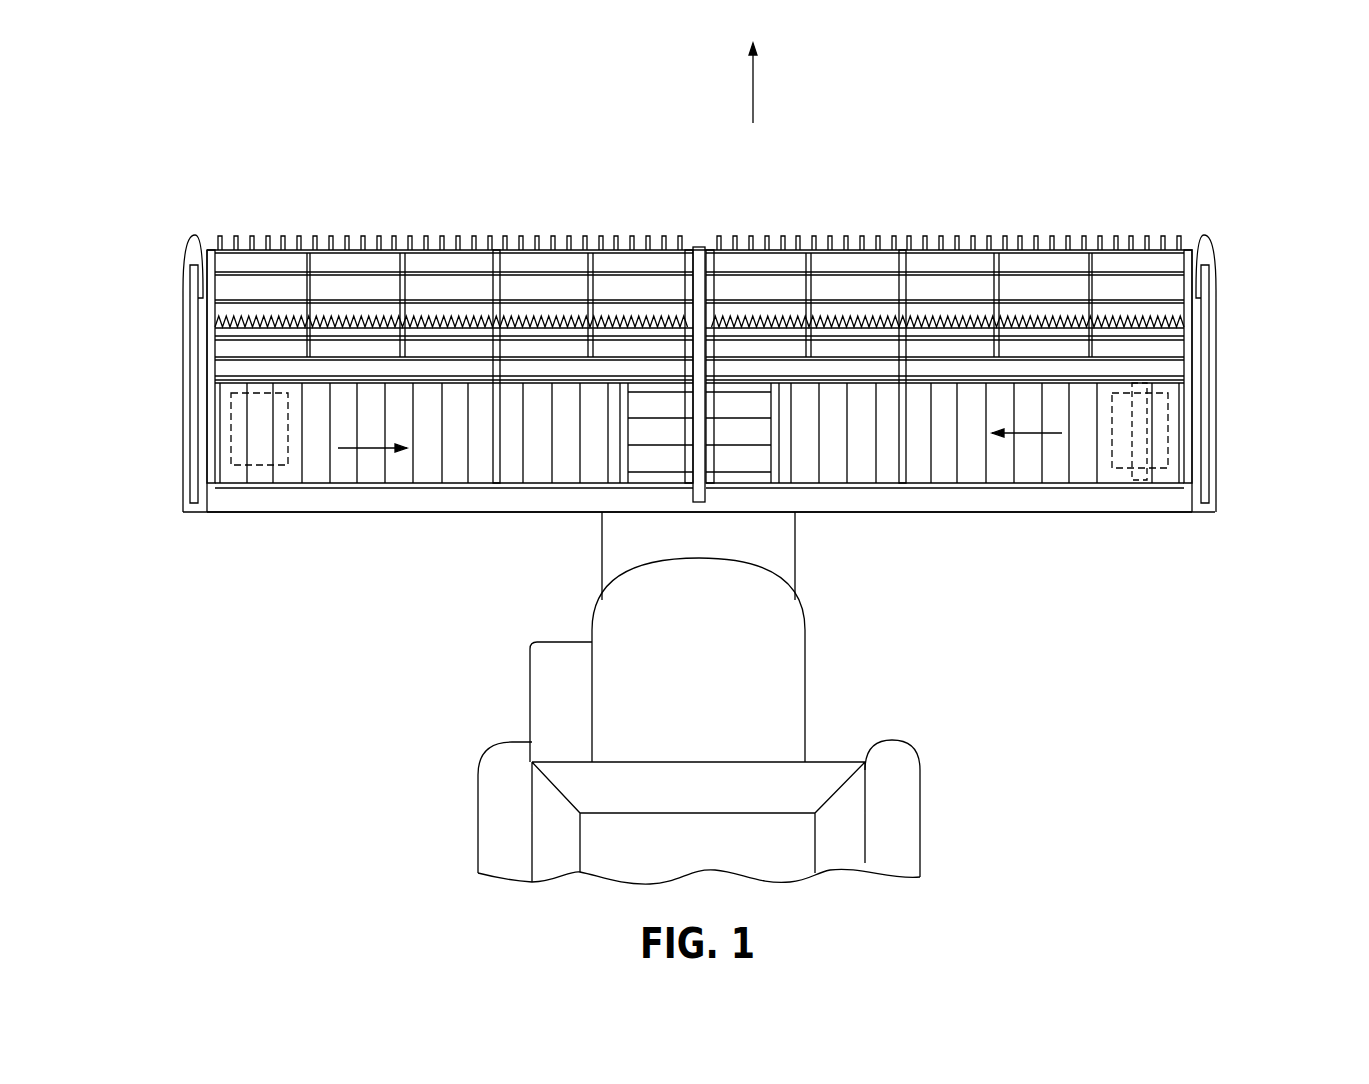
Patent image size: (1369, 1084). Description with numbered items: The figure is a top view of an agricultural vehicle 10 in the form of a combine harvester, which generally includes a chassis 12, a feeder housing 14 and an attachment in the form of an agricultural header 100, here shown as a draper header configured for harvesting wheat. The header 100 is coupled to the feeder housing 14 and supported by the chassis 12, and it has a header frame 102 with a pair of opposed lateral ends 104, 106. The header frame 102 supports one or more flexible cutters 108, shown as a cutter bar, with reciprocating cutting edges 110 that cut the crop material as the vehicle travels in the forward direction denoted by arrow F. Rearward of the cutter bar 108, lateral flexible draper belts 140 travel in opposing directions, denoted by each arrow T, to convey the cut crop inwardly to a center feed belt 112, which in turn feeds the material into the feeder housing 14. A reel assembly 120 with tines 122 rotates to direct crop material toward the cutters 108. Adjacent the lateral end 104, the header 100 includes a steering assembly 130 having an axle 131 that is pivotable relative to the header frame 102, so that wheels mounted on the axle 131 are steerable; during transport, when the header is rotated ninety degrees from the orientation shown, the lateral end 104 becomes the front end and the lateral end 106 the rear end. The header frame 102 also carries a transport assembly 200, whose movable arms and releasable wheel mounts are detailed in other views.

The agricultural vehicle 10 is at (867, 833).
The chassis 12 is at (805, 680).
The feeder housing 14 is at (785, 560).
The agricultural header 100 is at (1232, 520).
The header frame 102 is at (512, 512).
The lateral end 104 is at (1223, 448).
The lateral end 106 is at (176, 447).
The flexible cutter 108 is at (263, 317).
The reciprocating cutting edges 110 is at (244, 318).
The center feed belt 112 is at (735, 412).
The reel assembly 120 is at (855, 162).
The tines 122 is at (630, 237).
The steering assembly 130 is at (1165, 483).
The axle 131 is at (1140, 483).
The draper belts 140 is at (430, 455).
The transport assembly 200 is at (255, 470).
The direction of travel T is at (377, 448).
The forward direction F is at (753, 97).